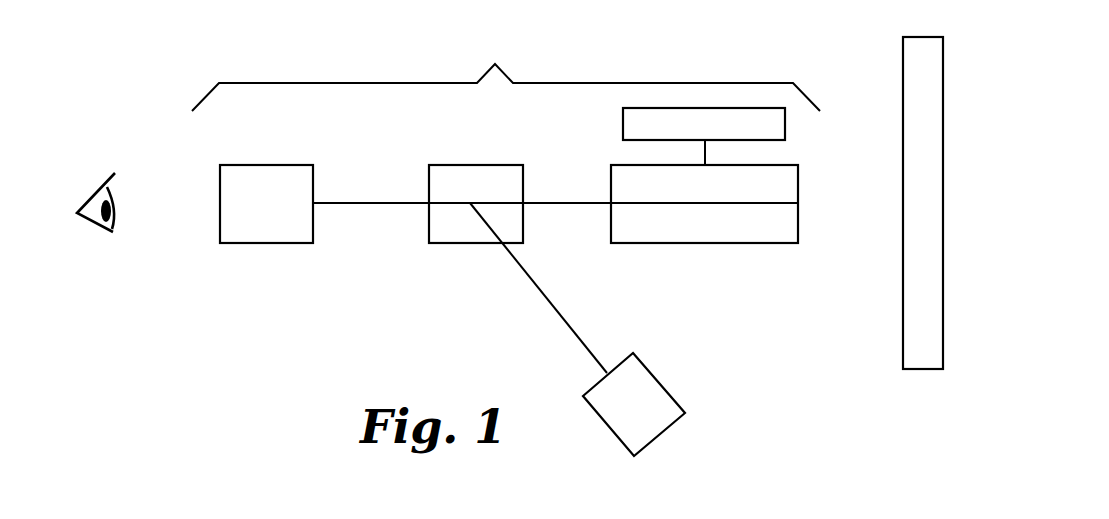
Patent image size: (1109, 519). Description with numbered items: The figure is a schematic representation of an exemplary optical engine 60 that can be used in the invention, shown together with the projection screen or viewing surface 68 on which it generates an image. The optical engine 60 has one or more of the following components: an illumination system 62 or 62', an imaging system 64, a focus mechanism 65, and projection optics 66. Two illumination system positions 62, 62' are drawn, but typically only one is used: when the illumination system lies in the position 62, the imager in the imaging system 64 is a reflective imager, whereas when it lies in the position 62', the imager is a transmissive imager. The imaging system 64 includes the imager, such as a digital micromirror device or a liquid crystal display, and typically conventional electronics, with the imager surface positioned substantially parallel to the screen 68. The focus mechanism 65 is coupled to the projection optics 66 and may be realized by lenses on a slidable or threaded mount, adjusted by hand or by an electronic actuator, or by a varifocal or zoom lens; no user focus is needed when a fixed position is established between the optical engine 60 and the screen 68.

The optical engine 60 is at (506, 72).
The illumination system 62 is at (657, 409).
The illumination system 62' is at (266, 241).
The imaging system 64 is at (452, 232).
The focus mechanism 65 is at (628, 123).
The projection optics 66 is at (756, 232).
The projection screen 68 is at (914, 58).